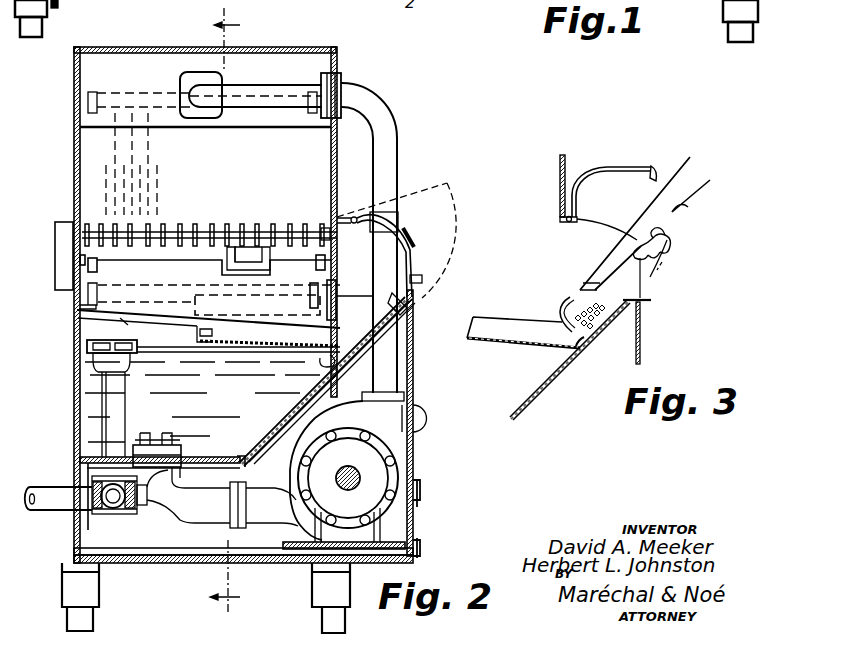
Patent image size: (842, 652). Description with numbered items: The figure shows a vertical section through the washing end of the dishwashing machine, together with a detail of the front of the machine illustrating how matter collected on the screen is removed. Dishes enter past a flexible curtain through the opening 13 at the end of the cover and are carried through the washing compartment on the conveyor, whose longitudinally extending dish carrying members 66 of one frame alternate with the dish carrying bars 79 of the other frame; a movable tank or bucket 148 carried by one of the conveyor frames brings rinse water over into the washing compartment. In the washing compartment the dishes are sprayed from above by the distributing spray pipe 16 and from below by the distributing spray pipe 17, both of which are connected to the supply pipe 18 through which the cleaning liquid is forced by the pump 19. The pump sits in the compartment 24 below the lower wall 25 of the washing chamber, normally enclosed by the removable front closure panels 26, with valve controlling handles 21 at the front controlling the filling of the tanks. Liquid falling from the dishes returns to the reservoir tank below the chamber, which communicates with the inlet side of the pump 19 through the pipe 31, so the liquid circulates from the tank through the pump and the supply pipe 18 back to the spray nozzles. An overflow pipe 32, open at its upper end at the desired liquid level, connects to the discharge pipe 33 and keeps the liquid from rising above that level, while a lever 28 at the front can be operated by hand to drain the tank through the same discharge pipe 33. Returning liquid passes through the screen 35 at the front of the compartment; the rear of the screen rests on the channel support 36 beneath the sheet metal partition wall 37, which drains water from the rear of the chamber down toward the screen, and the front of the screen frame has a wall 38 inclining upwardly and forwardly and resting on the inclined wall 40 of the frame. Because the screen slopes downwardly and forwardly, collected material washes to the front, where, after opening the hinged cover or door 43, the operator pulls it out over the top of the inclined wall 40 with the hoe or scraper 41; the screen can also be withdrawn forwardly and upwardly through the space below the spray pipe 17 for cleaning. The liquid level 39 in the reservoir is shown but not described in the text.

In FIG. 2, the opening 13 is at (219, 311).
In FIG. 2, the distributing spray pipe 16 is at (138, 90).
In FIG. 2, the distributing spray pipe 17 is at (134, 330).
In FIG. 2, the supply pipe 18 is at (388, 150).
In FIG. 2, the pump 19 is at (405, 468).
In FIG. 2, the valve controlling handle 21 is at (425, 414).
In FIG. 2, the compartment 24 is at (332, 381).
In FIG. 2, the lower wall 25 is at (268, 440).
In FIG. 3, the lower wall 25 is at (526, 408).
In FIG. 2, the removable front closure panel 26 is at (414, 368).
In FIG. 2, the lever 28 is at (423, 498).
In FIG. 2, the pipe 31 is at (183, 455).
In FIG. 2, the overflow pipe 32 is at (86, 348).
In FIG. 2, the discharge pipe 33 is at (46, 492).
In FIG. 2, the screen 35 is at (197, 338).
In FIG. 3, the screen 35 is at (503, 338).
In FIG. 2, the channel support 36 is at (195, 348).
In FIG. 2, the sheet metal partition wall 37 is at (78, 305).
In FIG. 3, the wall 38 is at (577, 348).
In FIG. 2, the liquid 39 is at (235, 420).
In FIG. 3, the inclined wall 40 is at (592, 330).
In FIG. 3, the hoe or scraper 41 is at (598, 278).
In FIG. 2, the hinged cover or door 43 is at (425, 258).
In FIG. 3, the hinged cover or door 43 is at (649, 167).
In FIG. 2, the carrying member 66 is at (190, 226).
In FIG. 2, the dish carrying member or bar 79 is at (238, 235).
In FIG. 2, the movable tank or bucket 148 is at (258, 226).